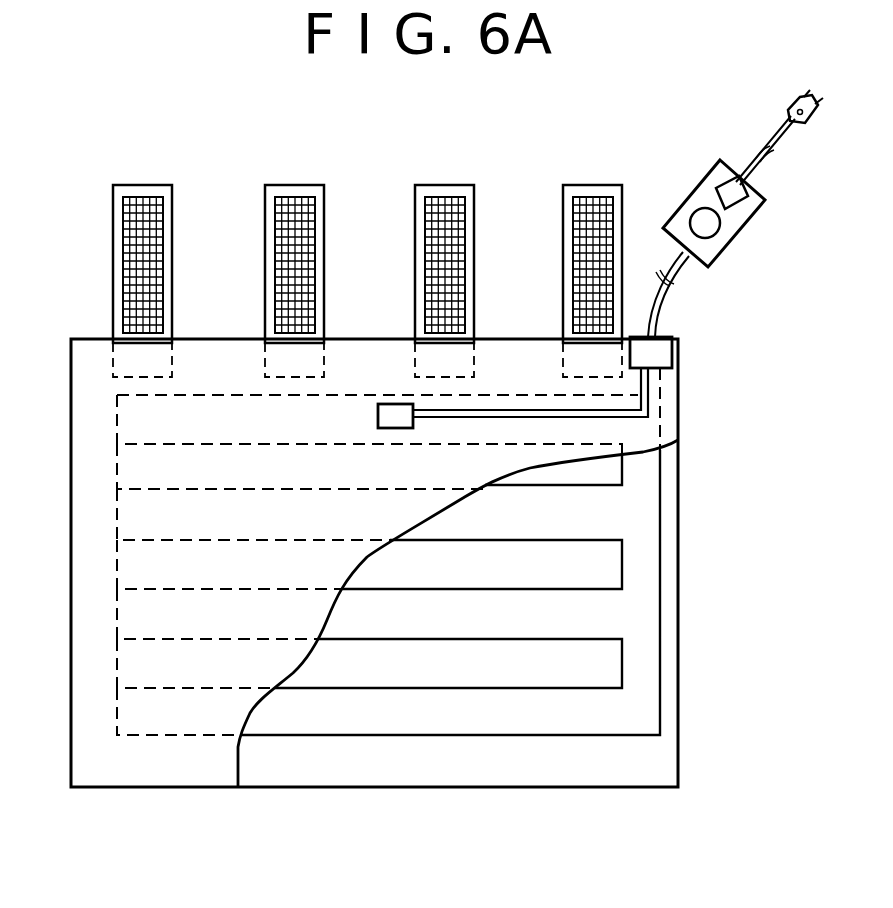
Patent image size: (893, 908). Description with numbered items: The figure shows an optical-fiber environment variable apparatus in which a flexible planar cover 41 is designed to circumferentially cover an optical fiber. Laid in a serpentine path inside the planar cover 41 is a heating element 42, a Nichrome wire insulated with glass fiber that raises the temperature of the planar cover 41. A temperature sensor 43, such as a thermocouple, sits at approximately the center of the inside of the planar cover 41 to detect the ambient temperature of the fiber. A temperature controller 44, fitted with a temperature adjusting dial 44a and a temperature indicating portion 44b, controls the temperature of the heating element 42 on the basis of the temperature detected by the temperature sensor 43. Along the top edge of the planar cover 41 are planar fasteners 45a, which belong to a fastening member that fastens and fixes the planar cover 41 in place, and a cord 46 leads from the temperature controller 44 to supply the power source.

The planar cover 41 is at (278, 770).
The heating element 42 is at (660, 667).
The temperature sensor 43 is at (397, 410).
The temperature controller 44 is at (707, 234).
The temperature adjusting dial 44a is at (700, 218).
The temperature indicating portion 44b is at (727, 187).
The planar fastener 45a is at (140, 197).
The cord 46 is at (785, 142).